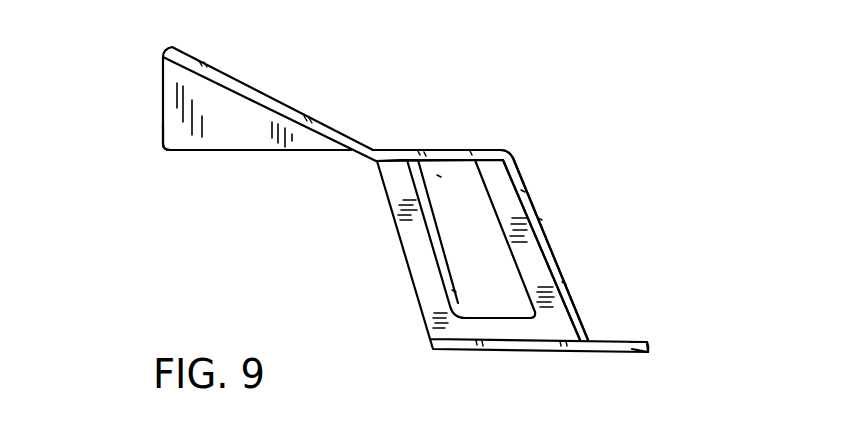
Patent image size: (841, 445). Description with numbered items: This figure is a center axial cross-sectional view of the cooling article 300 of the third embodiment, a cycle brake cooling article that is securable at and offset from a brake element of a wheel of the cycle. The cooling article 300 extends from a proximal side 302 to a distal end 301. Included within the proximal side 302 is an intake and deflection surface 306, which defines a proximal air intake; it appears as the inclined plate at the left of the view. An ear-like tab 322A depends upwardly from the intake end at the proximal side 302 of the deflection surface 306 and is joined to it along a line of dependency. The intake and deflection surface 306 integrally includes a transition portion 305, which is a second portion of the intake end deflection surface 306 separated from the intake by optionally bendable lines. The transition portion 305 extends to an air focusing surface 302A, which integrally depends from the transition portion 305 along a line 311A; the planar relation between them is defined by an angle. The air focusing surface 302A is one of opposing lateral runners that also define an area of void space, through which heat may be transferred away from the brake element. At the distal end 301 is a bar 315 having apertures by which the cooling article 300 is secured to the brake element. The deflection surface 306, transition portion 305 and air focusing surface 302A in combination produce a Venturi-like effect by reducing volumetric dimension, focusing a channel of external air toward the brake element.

The cooling article 300 is at (532, 397).
The distal end 301 is at (657, 347).
The proximal side 302 is at (233, 240).
The air focusing surface 302A is at (548, 240).
The transition portion 305 is at (470, 146).
The intake and deflection surface 306 is at (275, 99).
The line of dependency 311A is at (378, 147).
The bar 315 is at (630, 342).
The ear-like tab 322A is at (163, 133).